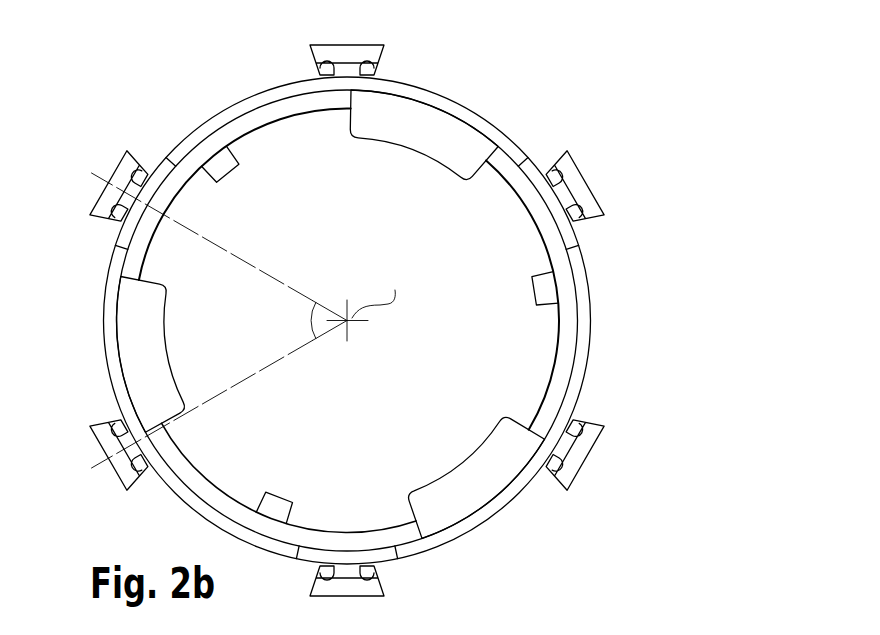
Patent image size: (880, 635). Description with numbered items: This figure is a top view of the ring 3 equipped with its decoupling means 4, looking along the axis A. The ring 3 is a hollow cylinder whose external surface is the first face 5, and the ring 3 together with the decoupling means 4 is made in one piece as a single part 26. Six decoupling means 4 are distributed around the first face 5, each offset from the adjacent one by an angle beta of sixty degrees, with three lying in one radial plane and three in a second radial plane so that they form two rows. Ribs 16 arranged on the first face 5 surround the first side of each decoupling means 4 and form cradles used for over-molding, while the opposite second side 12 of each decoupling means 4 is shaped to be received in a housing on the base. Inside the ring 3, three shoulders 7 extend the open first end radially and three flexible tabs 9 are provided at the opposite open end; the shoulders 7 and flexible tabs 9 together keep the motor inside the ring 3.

The ring 3 is at (485, 97).
The decoupling means 4 is at (331, 40).
The first face 5 is at (590, 321).
The shoulders 7 is at (330, 314).
The flexible tabs 9 is at (228, 173).
The second side 12 is at (598, 456).
The ribs 16 is at (417, 83).
The single part 26 is at (652, 86).